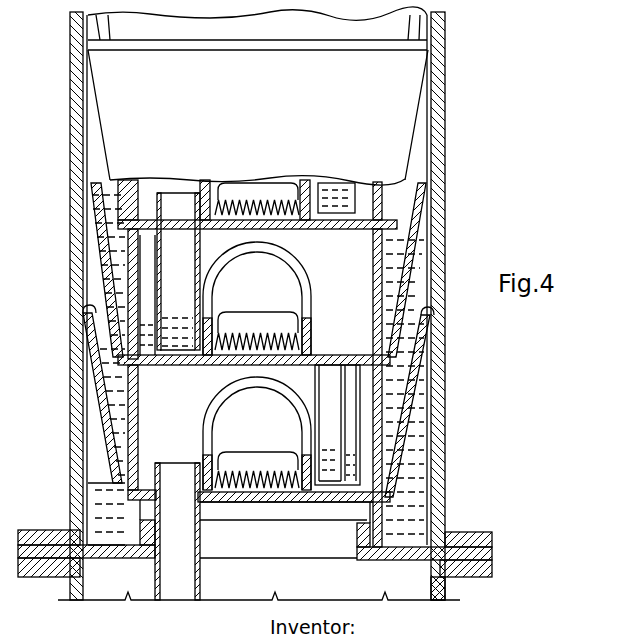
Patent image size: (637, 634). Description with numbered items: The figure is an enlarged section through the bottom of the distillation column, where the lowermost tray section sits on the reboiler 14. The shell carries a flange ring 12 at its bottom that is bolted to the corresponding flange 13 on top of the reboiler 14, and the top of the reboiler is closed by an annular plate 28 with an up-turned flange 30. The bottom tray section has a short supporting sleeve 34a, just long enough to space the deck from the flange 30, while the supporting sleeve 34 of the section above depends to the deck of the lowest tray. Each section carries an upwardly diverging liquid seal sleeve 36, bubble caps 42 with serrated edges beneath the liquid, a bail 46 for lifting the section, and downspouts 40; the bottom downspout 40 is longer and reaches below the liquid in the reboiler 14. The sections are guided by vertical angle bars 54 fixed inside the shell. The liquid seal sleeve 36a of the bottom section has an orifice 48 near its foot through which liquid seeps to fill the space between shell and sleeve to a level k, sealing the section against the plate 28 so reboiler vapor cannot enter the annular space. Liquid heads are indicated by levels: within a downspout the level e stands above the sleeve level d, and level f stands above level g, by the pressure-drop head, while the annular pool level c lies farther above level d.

The liquid seal sleeve 36 is at (258, 96).
The downspout 40 is at (158, 250).
The vertical angle bar 54 is at (86, 268).
The annular pool level c is at (100, 318).
The tray liquid level g is at (163, 298).
The downspout liquid level f is at (186, 325).
The bubble cap 42 is at (236, 322).
The bail 46 is at (300, 272).
The sealing liquid level k is at (92, 402).
The supporting sleeve 34 is at (136, 392).
The liquid seal sleeve of lowermost section 36a is at (412, 385).
The orifice 48 is at (116, 484).
The downspout liquid level e is at (338, 460).
The sleeve liquid level d is at (372, 470).
The flange ring 12 is at (458, 535).
The supporting sleeve of lowermost section 34a is at (373, 508).
The up-turned flange 30 is at (362, 522).
The annular plate 28 is at (405, 560).
The flange 13 is at (492, 570).
The reboiler 14 is at (445, 592).